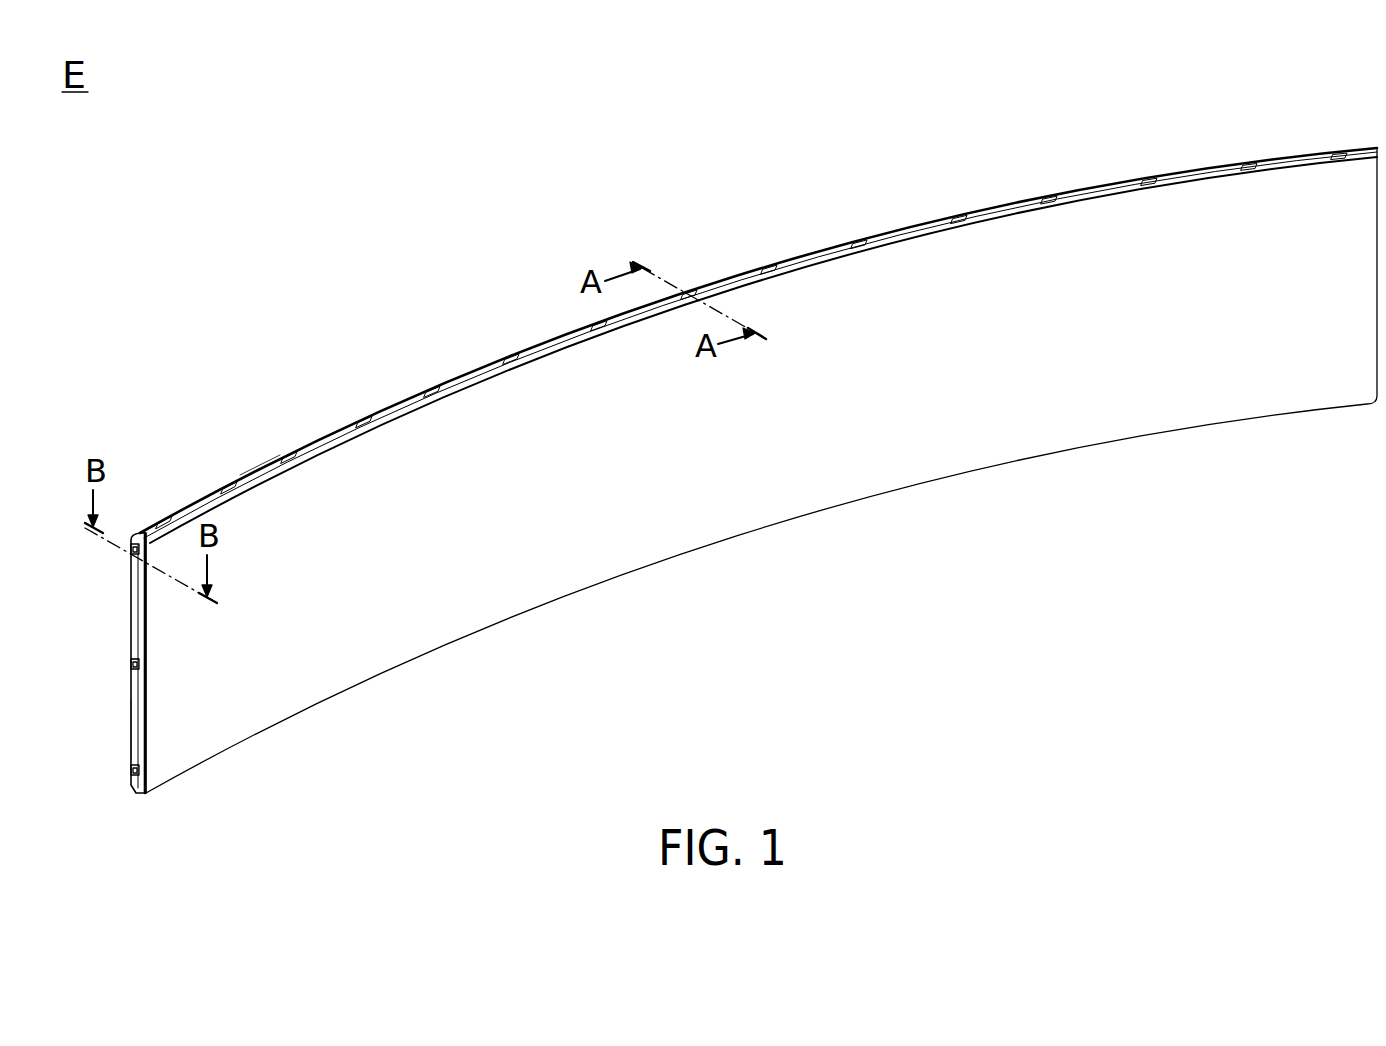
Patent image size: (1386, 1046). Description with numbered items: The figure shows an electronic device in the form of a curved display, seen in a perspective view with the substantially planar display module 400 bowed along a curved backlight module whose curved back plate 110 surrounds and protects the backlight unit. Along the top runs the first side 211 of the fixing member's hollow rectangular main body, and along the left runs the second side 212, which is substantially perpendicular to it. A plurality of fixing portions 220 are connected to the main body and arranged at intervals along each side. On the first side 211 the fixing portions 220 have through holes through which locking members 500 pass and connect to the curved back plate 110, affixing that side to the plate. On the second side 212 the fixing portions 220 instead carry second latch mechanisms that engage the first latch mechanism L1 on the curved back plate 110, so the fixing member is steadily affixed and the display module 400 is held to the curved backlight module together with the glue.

The curved back plate 110 is at (134, 597).
The first side 211 is at (563, 340).
The second side 212 is at (142, 710).
The fixing portion 220 is at (433, 388).
The display module 400 is at (1231, 387).
The locking member 500 is at (360, 412).
The first latch mechanism L1 is at (130, 663).